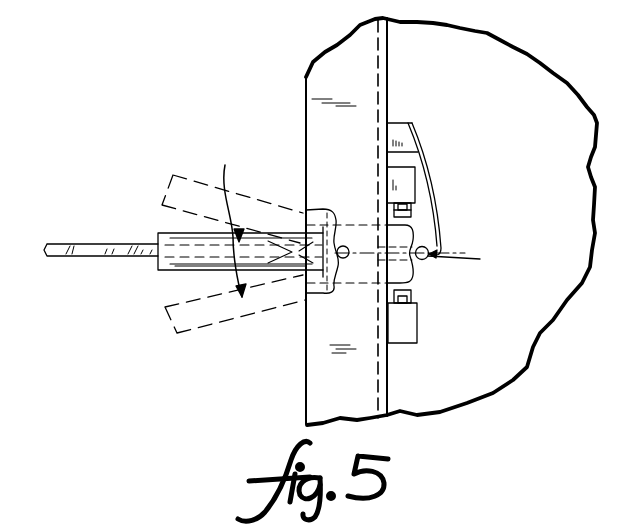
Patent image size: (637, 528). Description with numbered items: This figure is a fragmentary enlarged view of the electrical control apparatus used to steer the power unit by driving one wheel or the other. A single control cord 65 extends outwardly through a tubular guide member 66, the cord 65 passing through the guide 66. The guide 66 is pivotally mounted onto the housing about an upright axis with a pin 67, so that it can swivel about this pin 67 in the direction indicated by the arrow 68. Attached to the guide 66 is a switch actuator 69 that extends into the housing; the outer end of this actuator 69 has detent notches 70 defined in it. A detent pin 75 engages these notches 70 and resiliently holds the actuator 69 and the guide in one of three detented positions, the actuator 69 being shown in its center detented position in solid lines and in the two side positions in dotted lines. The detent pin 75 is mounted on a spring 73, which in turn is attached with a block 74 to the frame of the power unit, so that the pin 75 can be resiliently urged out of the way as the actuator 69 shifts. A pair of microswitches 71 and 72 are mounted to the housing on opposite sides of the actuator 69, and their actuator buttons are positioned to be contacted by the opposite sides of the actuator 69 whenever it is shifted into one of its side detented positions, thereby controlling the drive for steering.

The control cord 65 is at (98, 246).
The guide member 66 is at (181, 270).
The pin 67 is at (343, 246).
The arrow 68 is at (235, 220).
The switch actuator 69 is at (410, 238).
The detent notches 70 is at (413, 268).
The microswitch 71 is at (407, 328).
The microswitch 72 is at (405, 183).
The spring 73 is at (425, 153).
The block 74 is at (393, 135).
The detent pin 75 is at (433, 253).